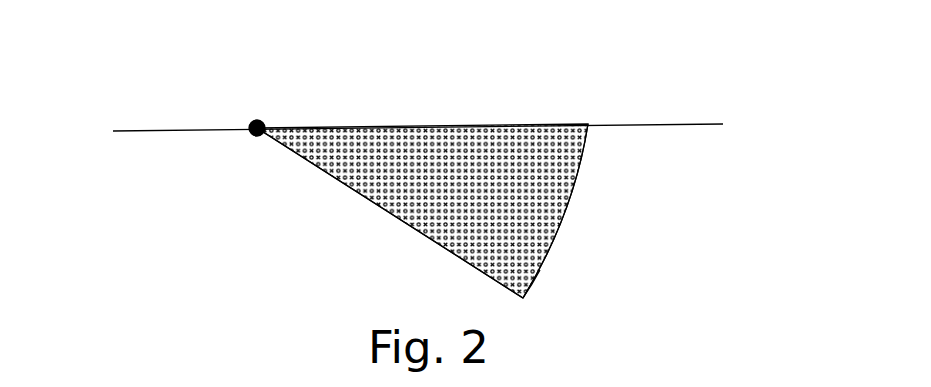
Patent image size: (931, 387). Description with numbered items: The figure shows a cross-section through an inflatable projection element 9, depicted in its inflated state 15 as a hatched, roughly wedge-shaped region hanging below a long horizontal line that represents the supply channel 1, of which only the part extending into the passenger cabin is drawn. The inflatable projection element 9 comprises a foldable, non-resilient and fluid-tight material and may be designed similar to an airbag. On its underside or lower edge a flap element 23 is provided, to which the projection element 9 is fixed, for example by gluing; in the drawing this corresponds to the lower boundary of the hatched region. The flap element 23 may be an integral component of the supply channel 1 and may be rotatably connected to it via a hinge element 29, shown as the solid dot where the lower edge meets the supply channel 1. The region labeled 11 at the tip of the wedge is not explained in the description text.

The supply channel 1 is at (477, 81).
The inflatable projection element 9 is at (523, 168).
The apex / tip region 11 is at (555, 247).
The inflated state 15 is at (293, 200).
The flap element 23 is at (438, 245).
The hinge element 29 is at (257, 119).